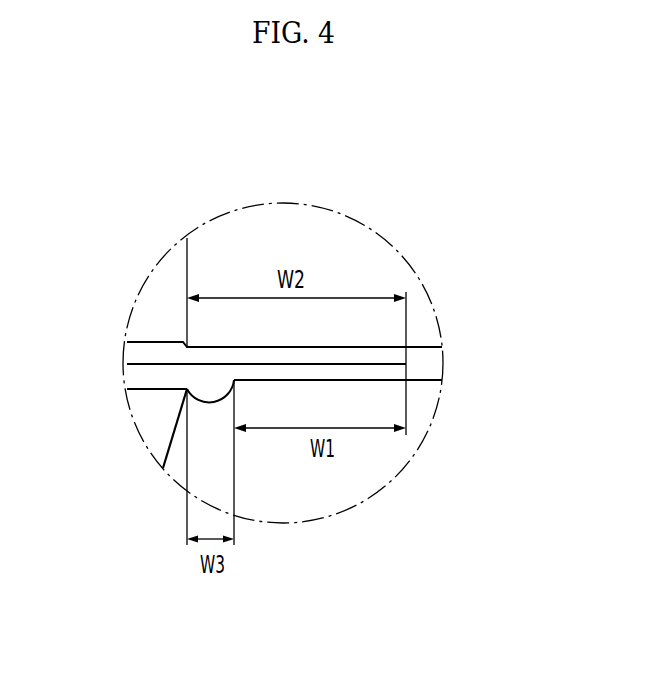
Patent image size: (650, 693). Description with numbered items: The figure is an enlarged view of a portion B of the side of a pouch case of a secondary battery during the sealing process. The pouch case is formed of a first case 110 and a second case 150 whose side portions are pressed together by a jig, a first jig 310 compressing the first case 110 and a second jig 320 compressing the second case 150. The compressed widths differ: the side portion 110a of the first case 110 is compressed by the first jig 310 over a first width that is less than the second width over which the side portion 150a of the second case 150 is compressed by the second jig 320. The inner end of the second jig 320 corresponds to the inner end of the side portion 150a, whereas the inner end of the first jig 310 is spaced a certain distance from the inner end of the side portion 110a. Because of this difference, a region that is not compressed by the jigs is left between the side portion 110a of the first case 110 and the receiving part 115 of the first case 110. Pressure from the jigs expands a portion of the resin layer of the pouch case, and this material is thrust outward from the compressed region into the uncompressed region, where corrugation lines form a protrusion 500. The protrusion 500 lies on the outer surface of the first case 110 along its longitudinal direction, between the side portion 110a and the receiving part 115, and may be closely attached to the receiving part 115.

The first case 110 is at (140, 390).
The side portion of the first case 110a is at (405, 373).
The receiving part 115 is at (174, 453).
The second case 150 is at (140, 341).
The side portion of the second case 150a is at (405, 356).
The first jig 310 is at (293, 498).
The second jig 320 is at (240, 228).
The protrusion 500 is at (205, 405).
The portion B is at (365, 225).